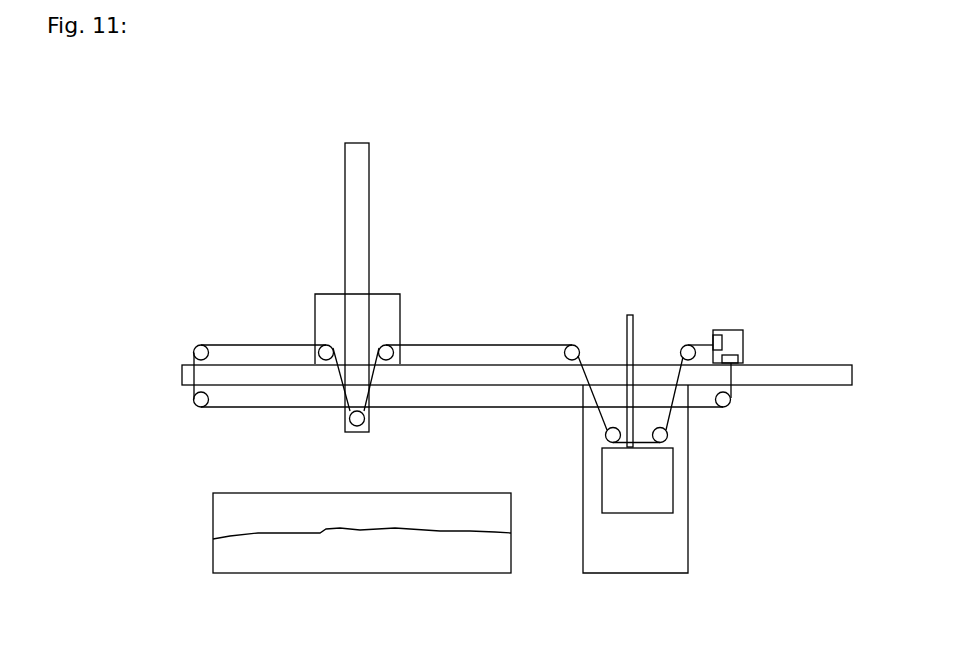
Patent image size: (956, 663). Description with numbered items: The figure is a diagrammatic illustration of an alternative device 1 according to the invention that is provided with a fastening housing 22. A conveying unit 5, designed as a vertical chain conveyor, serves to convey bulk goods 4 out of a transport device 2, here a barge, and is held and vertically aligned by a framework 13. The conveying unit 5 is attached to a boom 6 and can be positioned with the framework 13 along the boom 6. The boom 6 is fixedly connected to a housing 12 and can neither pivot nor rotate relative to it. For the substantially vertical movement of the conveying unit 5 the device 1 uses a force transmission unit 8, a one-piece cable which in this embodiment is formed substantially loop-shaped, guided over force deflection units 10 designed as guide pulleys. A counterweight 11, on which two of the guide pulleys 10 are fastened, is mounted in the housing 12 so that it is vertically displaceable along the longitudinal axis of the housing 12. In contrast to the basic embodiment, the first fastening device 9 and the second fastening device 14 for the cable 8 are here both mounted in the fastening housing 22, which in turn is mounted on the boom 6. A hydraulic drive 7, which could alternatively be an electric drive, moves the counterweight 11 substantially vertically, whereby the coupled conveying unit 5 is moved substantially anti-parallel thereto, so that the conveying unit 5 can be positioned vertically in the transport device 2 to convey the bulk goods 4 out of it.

The device 1 is at (527, 170).
The transport device 2 is at (240, 493).
The bulk goods 4 is at (265, 557).
The conveying unit 5 is at (345, 204).
The boom 6 is at (267, 378).
The hydraulic drive 7 is at (635, 330).
The force transmission unit 8 is at (243, 345).
The first fastening device 9 is at (733, 355).
The force deflection units 10 is at (564, 350).
The counterweight 11 is at (673, 482).
The housing 12 is at (690, 443).
The framework 13 is at (315, 294).
The second fastening device 14 is at (721, 334).
The fastening housing 22 is at (743, 330).